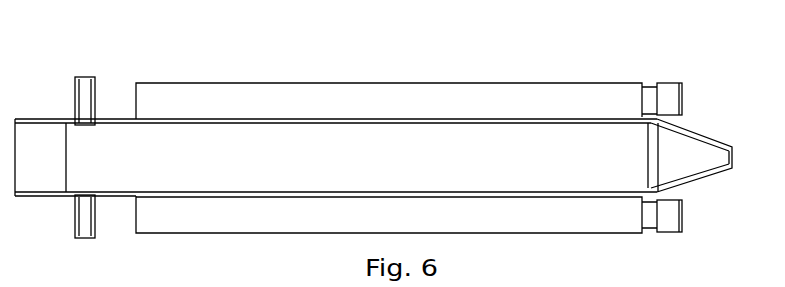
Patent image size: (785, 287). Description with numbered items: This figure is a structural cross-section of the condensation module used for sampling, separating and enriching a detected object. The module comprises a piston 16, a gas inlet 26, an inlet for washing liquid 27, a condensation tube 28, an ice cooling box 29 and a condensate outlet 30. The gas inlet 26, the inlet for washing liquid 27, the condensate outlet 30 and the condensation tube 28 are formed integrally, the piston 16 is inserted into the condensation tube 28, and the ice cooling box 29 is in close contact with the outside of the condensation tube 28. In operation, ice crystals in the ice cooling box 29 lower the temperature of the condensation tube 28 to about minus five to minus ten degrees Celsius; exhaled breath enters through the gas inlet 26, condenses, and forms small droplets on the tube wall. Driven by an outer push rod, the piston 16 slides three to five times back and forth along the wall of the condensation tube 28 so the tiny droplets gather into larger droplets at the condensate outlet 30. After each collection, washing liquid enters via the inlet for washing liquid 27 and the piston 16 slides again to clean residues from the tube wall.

The piston 16 is at (41, 137).
The gas inlet 26 is at (85, 97).
The inlet for washing liquid 27 is at (83, 225).
The condensation tube 28 is at (161, 158).
The ice cooling box 29 is at (198, 97).
The condensate outlet 30 is at (721, 160).